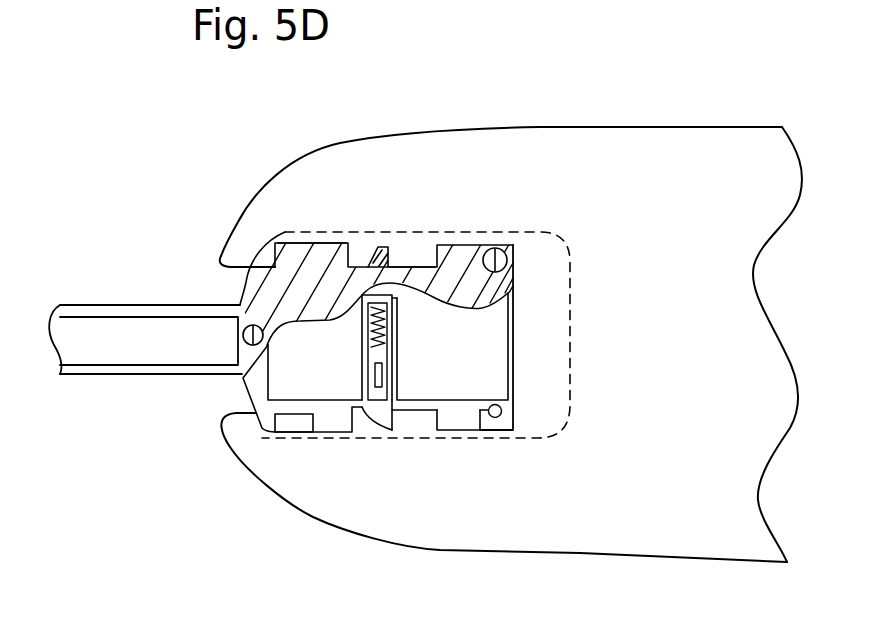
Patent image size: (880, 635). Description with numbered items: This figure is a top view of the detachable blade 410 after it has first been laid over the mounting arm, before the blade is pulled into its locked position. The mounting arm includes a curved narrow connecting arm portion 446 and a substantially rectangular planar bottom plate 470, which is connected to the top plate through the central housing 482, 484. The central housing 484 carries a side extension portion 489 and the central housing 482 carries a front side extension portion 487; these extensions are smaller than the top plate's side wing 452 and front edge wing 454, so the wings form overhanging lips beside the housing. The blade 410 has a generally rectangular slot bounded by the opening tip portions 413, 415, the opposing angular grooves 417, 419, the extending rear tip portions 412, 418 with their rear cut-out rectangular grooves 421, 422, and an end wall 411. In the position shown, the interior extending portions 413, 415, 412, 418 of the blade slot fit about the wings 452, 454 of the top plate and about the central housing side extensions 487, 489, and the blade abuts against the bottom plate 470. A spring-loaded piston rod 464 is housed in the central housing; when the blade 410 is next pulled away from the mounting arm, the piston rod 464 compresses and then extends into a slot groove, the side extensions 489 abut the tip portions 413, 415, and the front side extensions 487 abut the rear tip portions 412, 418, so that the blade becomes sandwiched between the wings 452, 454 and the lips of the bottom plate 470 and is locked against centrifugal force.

The detachable blade 410 is at (668, 172).
The opening tip portion 415 is at (237, 240).
The side wing 452 is at (327, 232).
The angular groove 417 is at (379, 232).
The rear tip portion 412 is at (418, 250).
The rear cut-out rectangular groove 421 is at (487, 234).
The connecting arm portion 446 is at (120, 328).
The front edge wing 454 is at (462, 284).
The end wall 411 is at (517, 348).
The bottom plate 470 is at (573, 398).
The front side extension portion 487 is at (507, 440).
The rear cut-out rectangular groove 422 is at (462, 440).
The rear tip portion 418 is at (417, 425).
The angular groove 419 is at (385, 433).
The piston rod 464 is at (378, 402).
The side extension portion 489 is at (333, 418).
The opening tip portion 413 is at (233, 432).
The central housing 484 is at (297, 366).
The central housing 482 is at (430, 364).